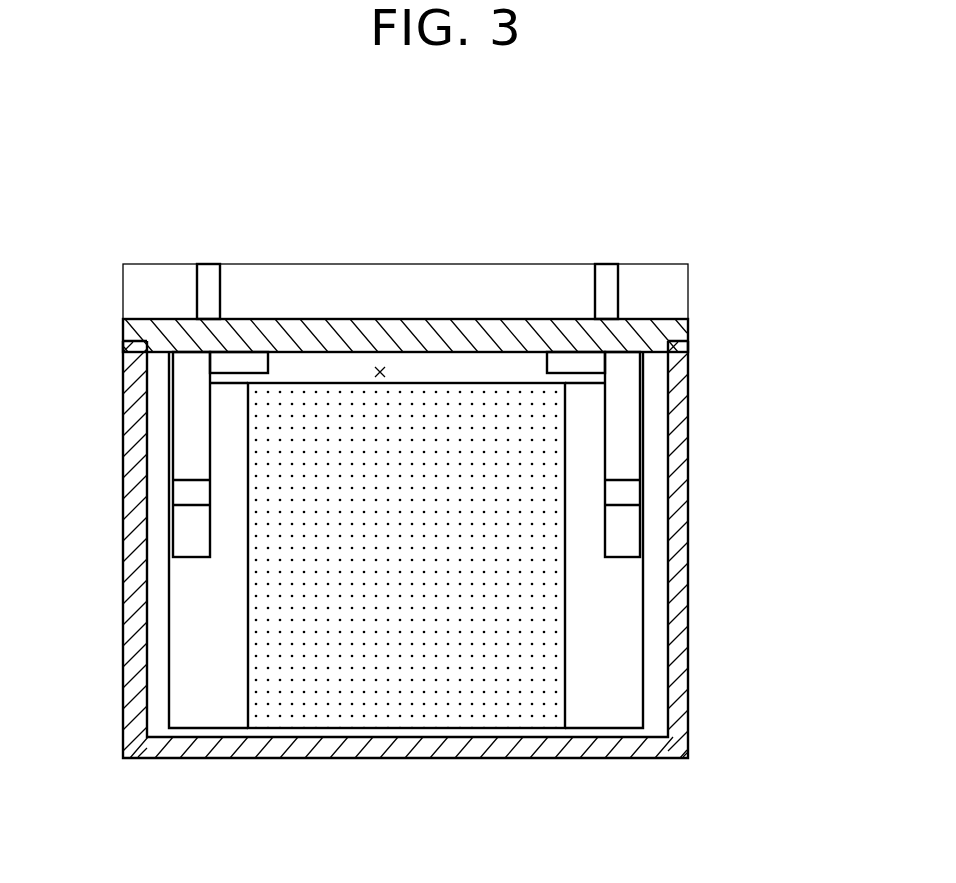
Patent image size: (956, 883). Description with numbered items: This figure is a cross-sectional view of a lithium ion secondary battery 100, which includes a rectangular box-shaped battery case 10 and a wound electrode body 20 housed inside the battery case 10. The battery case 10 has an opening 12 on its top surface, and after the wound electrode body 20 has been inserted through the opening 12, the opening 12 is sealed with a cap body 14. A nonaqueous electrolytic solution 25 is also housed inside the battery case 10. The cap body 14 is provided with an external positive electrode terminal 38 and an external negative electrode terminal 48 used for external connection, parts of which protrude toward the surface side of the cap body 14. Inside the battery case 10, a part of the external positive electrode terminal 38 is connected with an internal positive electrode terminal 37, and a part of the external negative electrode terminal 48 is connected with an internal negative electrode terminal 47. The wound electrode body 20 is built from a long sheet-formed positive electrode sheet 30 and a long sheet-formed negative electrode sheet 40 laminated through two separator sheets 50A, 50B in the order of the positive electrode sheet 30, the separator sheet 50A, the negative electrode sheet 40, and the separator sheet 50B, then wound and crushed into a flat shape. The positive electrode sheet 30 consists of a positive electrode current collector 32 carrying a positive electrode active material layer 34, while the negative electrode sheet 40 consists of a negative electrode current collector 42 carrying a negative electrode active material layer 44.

The lithium ion secondary battery 100 is at (815, 152).
The battery case 10 is at (680, 372).
The opening 12 is at (383, 366).
The cap body 14 is at (682, 328).
The wound electrode body 20 is at (418, 556).
The nonaqueous electrolytic solution 25 is at (497, 598).
The positive electrode sheet 30 is at (225, 590).
The positive electrode current collector 32 is at (208, 707).
The positive electrode active material layer 34 is at (330, 680).
The internal positive electrode terminal 37 is at (190, 440).
The external positive electrode terminal 38 is at (205, 268).
The negative electrode sheet 40 is at (600, 590).
The negative electrode current collector 42 is at (597, 713).
The negative electrode active material layer 44 is at (522, 677).
The internal negative electrode terminal 47 is at (622, 448).
The external negative electrode terminal 48 is at (607, 270).
The separator sheet 50A is at (406, 606).
The separator sheet 50B is at (425, 708).